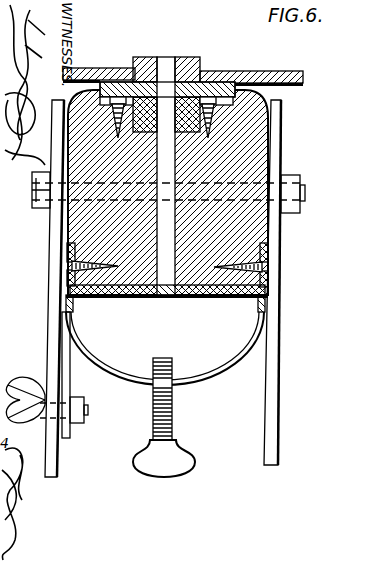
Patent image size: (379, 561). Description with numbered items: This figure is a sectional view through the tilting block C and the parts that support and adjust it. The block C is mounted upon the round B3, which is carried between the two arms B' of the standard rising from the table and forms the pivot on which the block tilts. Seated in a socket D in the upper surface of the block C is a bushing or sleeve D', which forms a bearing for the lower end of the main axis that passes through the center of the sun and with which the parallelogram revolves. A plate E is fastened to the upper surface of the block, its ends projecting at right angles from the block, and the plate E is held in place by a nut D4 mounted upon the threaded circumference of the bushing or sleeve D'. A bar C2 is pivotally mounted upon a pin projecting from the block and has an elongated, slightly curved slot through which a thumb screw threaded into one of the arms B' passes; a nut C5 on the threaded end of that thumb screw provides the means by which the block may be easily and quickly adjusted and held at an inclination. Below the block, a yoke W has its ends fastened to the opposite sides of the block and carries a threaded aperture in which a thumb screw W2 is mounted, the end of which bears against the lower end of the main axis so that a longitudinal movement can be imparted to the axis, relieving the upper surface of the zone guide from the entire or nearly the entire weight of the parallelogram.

The socket D is at (165, 79).
The bushing or sleeve D' is at (169, 153).
The nut D4 is at (200, 59).
The plate E is at (292, 72).
The tilting block C is at (262, 138).
The round B3 is at (305, 193).
The arms B' is at (168, 288).
The bar C2 is at (72, 373).
The yoke W is at (243, 332).
The nut C5 is at (79, 424).
The thumb screw W2 is at (183, 474).